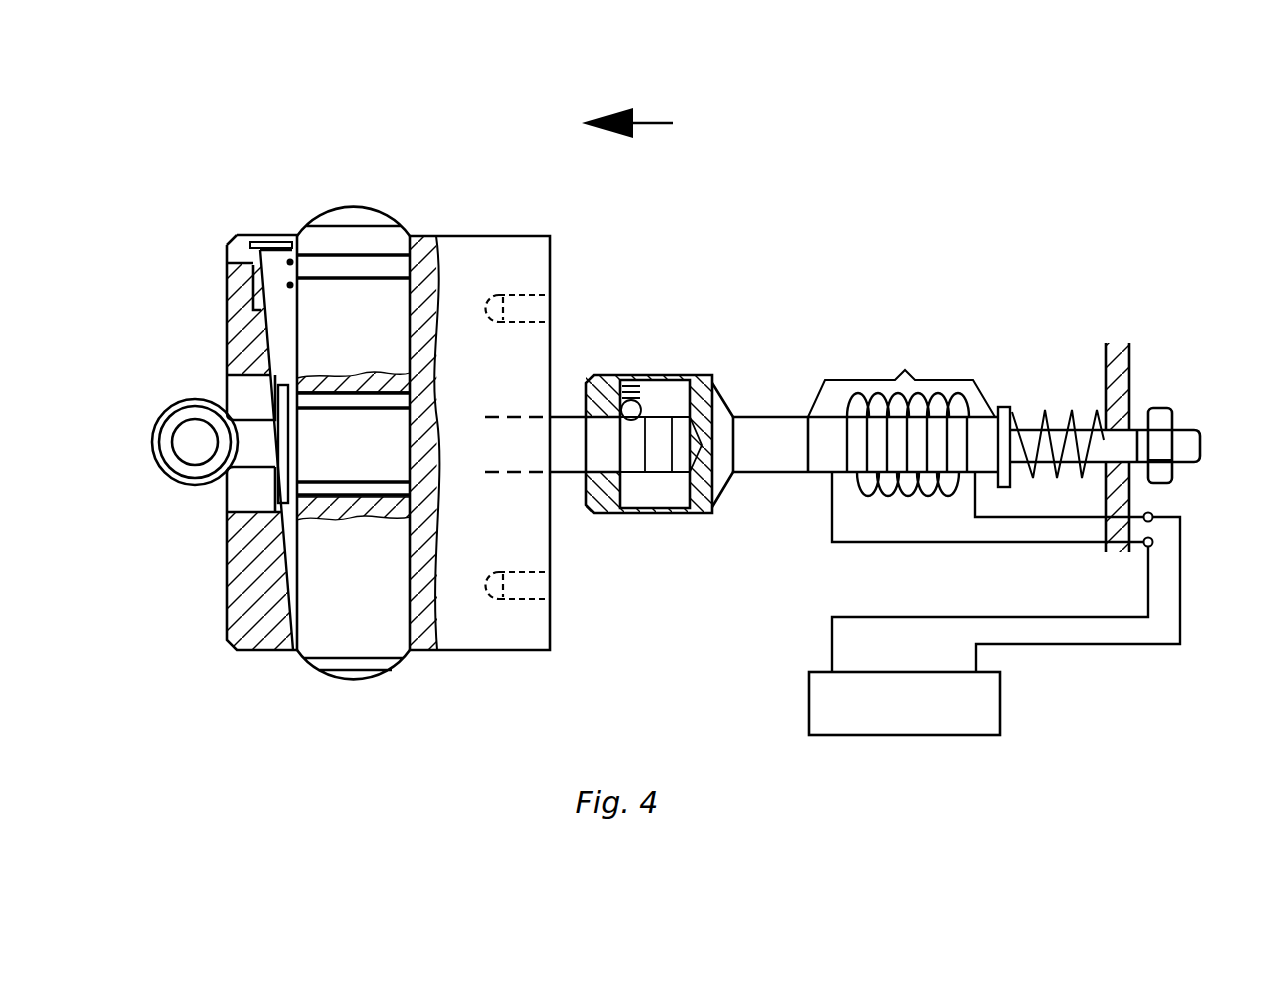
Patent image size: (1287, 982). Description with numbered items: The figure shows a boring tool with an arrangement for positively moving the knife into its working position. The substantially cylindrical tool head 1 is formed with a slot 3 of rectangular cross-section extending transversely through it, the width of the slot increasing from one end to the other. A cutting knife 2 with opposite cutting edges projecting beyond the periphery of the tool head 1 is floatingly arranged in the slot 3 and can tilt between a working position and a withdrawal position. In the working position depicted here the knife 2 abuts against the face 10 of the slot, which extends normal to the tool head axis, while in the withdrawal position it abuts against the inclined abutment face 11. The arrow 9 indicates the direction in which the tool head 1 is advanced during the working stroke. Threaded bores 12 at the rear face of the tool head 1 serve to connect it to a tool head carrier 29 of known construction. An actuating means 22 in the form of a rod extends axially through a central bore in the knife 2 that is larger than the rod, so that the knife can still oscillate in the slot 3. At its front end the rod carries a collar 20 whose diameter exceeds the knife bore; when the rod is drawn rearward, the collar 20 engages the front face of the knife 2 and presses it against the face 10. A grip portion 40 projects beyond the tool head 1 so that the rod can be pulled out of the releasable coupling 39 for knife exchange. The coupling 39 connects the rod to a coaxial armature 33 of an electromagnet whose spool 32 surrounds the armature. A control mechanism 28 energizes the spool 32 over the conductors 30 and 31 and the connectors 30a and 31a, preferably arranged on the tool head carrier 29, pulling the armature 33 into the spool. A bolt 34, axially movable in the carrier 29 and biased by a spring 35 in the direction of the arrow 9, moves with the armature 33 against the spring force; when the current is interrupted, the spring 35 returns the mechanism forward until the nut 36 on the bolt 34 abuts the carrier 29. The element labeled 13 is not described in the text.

The tool head 1 is at (465, 622).
The cutting knife 2 is at (360, 240).
The slot 3 is at (283, 335).
The arrow 9 is at (673, 123).
The face of the slot 10 is at (437, 275).
The abutment face 11 is at (280, 570).
The threaded bores 12 is at (530, 302).
The pivot pin 13 is at (272, 243).
The collar 20 is at (283, 478).
The actuating means 22 is at (583, 445).
The control mechanism 28 is at (919, 717).
The tool head carrier 29 is at (1120, 405).
The conductor 30 is at (1117, 646).
The connector 30a is at (1153, 515).
The conductor 31 is at (1150, 600).
The connector 31a is at (1153, 544).
The spool 32 is at (933, 395).
The armature 33 is at (901, 375).
The bolt 34 is at (1005, 412).
The spring 35 is at (1047, 410).
The nut 36 is at (1160, 415).
The releasable coupling 39 is at (697, 382).
The grip portion 40 is at (178, 410).